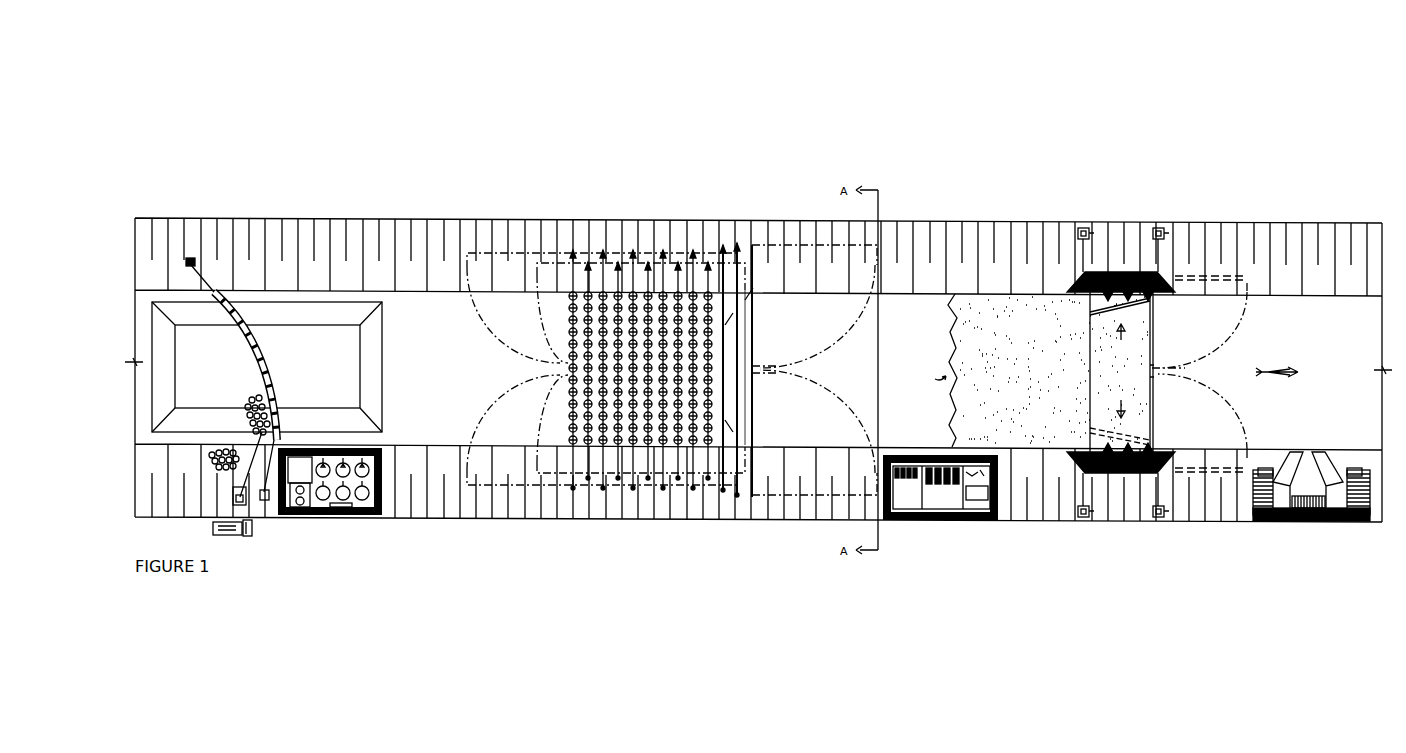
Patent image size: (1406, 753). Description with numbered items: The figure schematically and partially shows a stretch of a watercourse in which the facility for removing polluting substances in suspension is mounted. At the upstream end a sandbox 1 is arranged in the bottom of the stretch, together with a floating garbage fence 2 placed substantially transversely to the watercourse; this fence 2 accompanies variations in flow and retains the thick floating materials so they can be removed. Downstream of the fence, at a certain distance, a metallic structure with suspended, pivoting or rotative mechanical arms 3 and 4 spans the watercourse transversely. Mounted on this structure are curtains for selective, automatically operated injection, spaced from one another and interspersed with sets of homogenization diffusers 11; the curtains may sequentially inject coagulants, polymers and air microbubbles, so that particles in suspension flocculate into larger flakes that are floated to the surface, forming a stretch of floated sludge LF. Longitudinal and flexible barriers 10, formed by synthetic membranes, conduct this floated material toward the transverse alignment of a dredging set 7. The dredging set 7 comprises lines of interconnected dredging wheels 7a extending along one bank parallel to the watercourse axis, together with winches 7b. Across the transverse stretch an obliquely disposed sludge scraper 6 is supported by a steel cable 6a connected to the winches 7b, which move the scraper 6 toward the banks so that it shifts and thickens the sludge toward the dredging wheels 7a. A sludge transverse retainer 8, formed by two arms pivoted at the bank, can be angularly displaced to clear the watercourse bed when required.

The sandbox 1 is at (180, 366).
The floating garbage fence 2 is at (265, 351).
The mechanical arm 3 is at (650, 496).
The mechanical arm 4 is at (744, 504).
The sludge scraper 6 is at (1111, 318).
The steel cable 6a is at (1090, 388).
The dredging set 7 is at (1157, 350).
The dredging wheels 7a is at (1106, 276).
The winches 7b is at (1078, 226).
The sludge transverse retainer 8 is at (1150, 415).
The longitudinal flexible barriers 10 is at (1012, 293).
The homogenization diffusers 11 is at (636, 296).